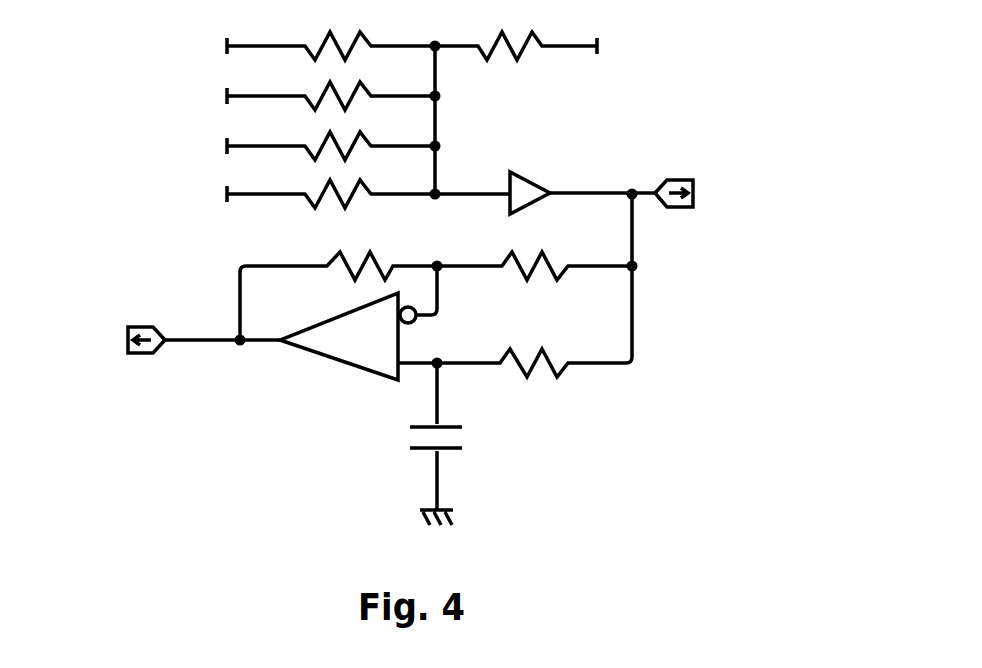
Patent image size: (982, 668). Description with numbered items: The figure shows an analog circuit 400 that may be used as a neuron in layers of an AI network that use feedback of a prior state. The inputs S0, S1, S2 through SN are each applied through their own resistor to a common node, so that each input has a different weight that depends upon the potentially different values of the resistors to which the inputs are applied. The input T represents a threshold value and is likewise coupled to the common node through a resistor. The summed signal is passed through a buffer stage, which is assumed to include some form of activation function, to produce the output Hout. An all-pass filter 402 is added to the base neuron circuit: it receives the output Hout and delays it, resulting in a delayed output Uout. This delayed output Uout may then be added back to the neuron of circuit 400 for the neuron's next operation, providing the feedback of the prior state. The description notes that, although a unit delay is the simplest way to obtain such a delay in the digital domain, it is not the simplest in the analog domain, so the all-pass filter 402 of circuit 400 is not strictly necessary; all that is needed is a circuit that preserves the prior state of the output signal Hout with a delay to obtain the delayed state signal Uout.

The analog circuit 400 is at (441, 277).
The all-pass filter 402 is at (441, 359).
The input S0 is at (299, 46).
The input S1 is at (299, 96).
The input S2 is at (299, 146).
The input SN is at (335, 194).
The input T is at (537, 46).
The output Hout is at (719, 194).
The delayed output Uout is at (160, 341).